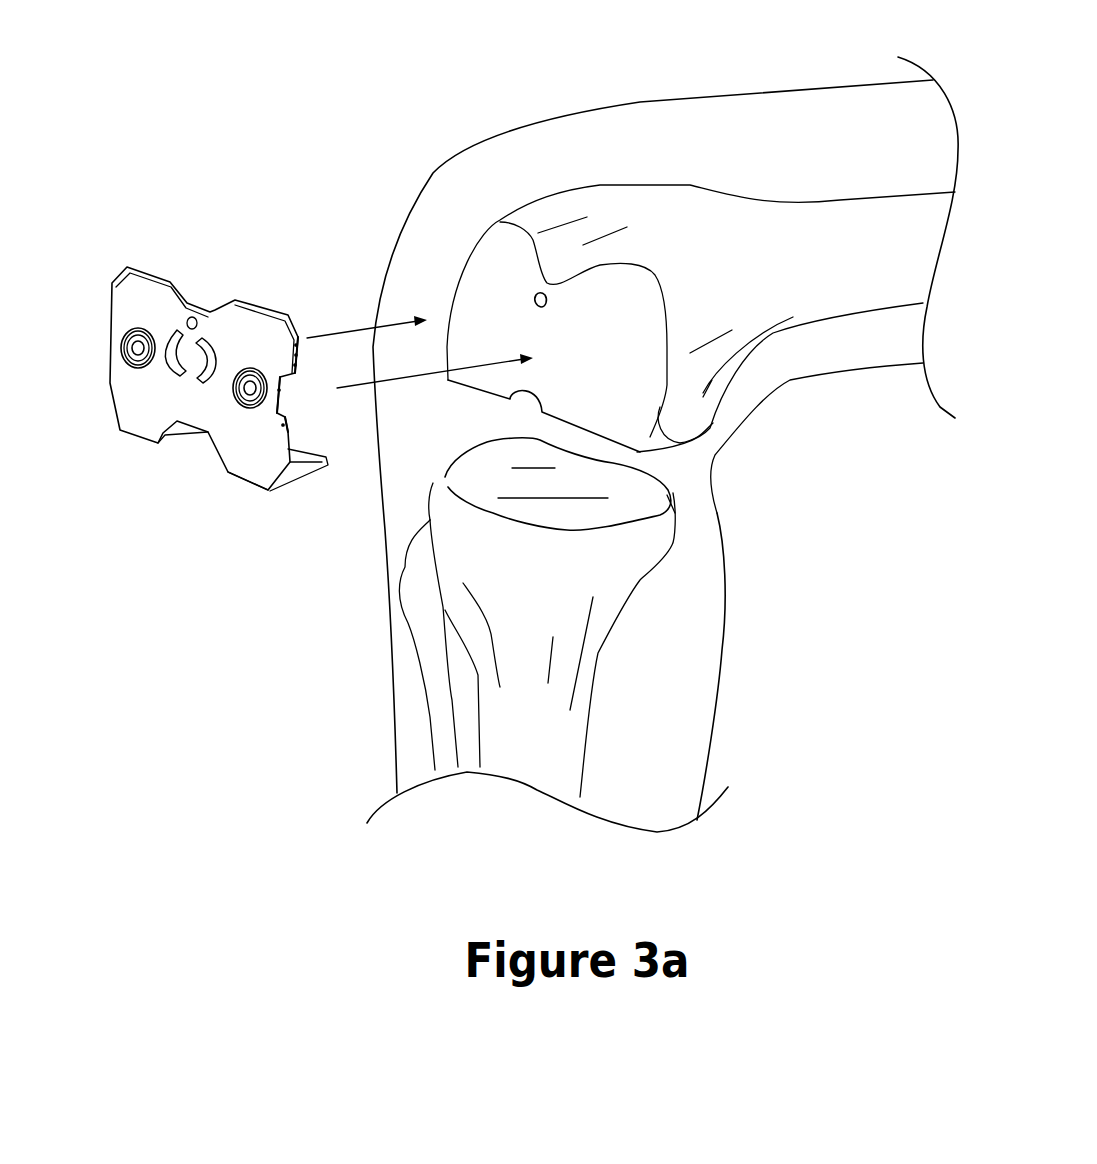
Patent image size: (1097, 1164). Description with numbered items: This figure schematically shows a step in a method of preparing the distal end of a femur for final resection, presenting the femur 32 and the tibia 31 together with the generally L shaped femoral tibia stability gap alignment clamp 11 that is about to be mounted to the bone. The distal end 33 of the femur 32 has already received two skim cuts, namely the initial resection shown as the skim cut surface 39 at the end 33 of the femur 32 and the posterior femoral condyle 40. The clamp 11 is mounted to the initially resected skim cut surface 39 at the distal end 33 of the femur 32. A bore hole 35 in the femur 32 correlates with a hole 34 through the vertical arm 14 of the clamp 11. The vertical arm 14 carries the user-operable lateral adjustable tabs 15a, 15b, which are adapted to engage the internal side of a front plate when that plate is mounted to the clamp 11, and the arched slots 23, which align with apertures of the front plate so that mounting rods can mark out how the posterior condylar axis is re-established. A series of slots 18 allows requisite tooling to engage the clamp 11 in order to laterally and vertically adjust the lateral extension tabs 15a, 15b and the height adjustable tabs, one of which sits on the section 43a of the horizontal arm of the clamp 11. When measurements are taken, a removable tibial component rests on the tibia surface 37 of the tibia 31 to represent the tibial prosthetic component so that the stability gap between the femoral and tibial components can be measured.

The generally L shaped femoral tibia stability gap alignment clamp 11 is at (108, 258).
The vertical arm 14 is at (124, 312).
The hole 34 is at (207, 307).
The arched slots 23 is at (213, 350).
The lateral adjustable tab 15a is at (248, 410).
The lateral adjustable tab 15b is at (130, 363).
The slots 18 is at (296, 368).
The section of the horizontal arm 43a is at (320, 451).
The distal end of the femur 33 is at (497, 205).
The bore hole 35 is at (538, 293).
The femur 32 is at (658, 213).
The posterior femoral condyle 40 is at (470, 401).
The initially resected skim cut surface 39 is at (652, 407).
The tibia surface 37 is at (642, 508).
The tibia 31 is at (608, 595).